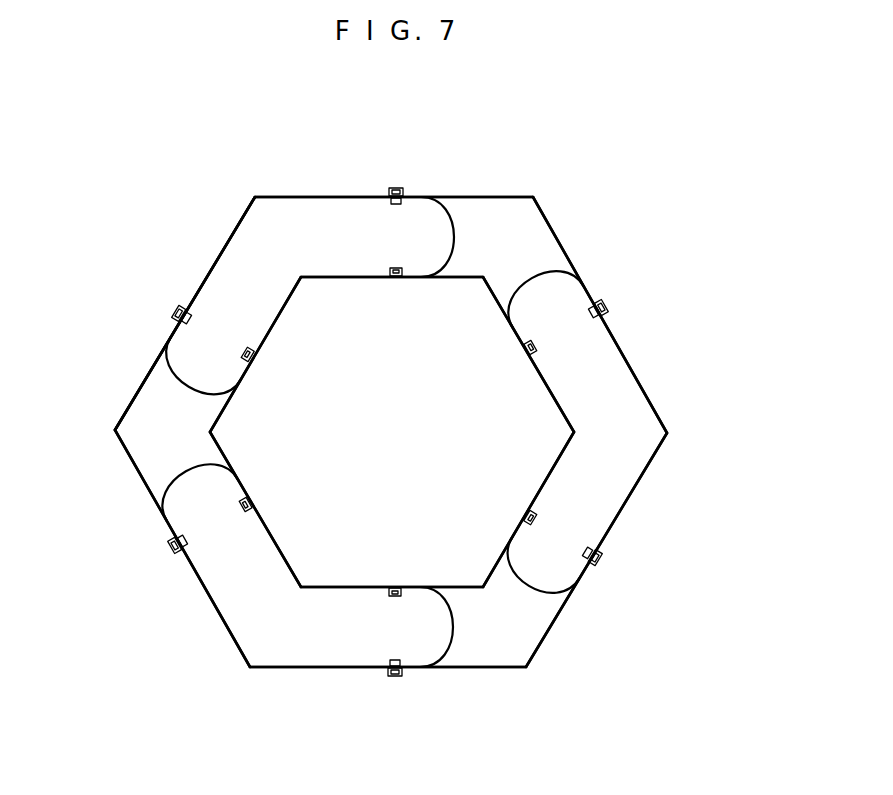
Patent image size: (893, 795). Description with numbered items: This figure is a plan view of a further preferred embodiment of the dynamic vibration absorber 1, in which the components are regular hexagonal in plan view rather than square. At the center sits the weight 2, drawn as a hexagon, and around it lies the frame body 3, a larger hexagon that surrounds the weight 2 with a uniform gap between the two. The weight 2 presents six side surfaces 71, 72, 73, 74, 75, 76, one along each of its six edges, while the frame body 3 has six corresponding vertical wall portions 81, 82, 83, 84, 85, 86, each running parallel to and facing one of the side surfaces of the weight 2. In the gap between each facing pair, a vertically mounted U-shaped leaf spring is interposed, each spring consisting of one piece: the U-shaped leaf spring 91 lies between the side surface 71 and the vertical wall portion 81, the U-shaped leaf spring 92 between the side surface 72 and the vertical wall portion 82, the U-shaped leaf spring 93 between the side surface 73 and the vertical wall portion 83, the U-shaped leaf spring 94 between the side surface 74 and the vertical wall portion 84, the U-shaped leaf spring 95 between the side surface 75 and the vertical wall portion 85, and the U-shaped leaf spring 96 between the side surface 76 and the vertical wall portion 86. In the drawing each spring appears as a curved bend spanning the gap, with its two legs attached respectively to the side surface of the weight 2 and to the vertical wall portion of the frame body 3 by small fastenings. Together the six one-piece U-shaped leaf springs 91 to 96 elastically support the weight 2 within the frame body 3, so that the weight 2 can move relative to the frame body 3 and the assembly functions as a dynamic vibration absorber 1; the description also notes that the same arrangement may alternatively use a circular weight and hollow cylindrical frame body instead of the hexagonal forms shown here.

The dynamic vibration absorber 1 is at (186, 270).
The weight 2 is at (312, 563).
The frame body 3 is at (641, 366).
The side surface 71 is at (287, 302).
The side surface 72 is at (282, 563).
The side surface 73 is at (468, 588).
The side surface 74 is at (559, 462).
The side surface 75 is at (565, 413).
The side surface 76 is at (473, 277).
The vertical wall portion 81 is at (160, 353).
The vertical wall portion 82 is at (215, 608).
The vertical wall portion 83 is at (360, 667).
The vertical wall portion 84 is at (613, 528).
The vertical wall portion 85 is at (563, 245).
The vertical wall portion 86 is at (342, 197).
The U-shaped leaf spring 91 is at (188, 382).
The U-shaped leaf spring 92 is at (190, 481).
The U-shaped leaf spring 93 is at (448, 630).
The U-shaped leaf spring 94 is at (530, 577).
The U-shaped leaf spring 95 is at (535, 292).
The U-shaped leaf spring 96 is at (453, 238).